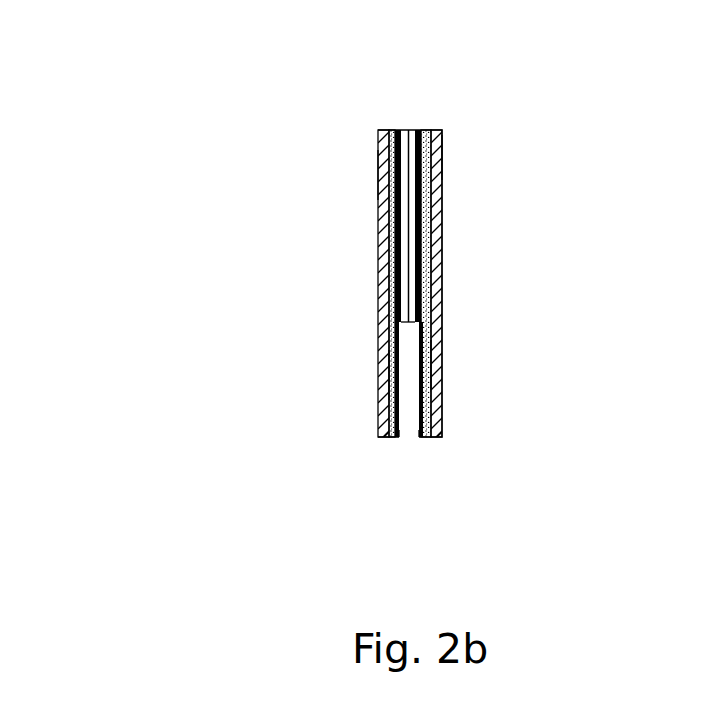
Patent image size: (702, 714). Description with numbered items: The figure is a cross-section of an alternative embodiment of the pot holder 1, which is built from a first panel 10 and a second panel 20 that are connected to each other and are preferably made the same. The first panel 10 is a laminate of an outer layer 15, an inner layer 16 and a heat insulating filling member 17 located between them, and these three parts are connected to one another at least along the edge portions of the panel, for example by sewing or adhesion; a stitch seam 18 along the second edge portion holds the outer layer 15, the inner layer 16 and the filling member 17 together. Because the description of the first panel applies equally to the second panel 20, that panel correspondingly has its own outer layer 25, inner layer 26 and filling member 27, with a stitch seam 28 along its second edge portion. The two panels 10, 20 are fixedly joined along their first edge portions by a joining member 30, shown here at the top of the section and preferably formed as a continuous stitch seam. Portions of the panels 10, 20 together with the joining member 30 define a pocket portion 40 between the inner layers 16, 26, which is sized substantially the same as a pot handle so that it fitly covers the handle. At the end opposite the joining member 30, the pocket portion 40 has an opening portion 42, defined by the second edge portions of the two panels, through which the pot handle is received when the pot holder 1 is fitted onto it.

The pot holder 1 is at (578, 126).
The first panel 10 is at (441, 402).
The outer layer 15 is at (442, 152).
The inner layer 16 is at (440, 364).
The heat insulating filling member 17 is at (428, 306).
The stitch seam 18 is at (423, 437).
The second panel 20 is at (379, 424).
The outer layer 25 is at (378, 172).
The inner surface of second substrate 26 is at (383, 376).
The second electrode layer 27 is at (390, 287).
The second conductive layer 28 is at (392, 437).
The joining member 30 is at (410, 130).
The pocket portion 40 is at (407, 263).
The opening portion 42 is at (412, 437).